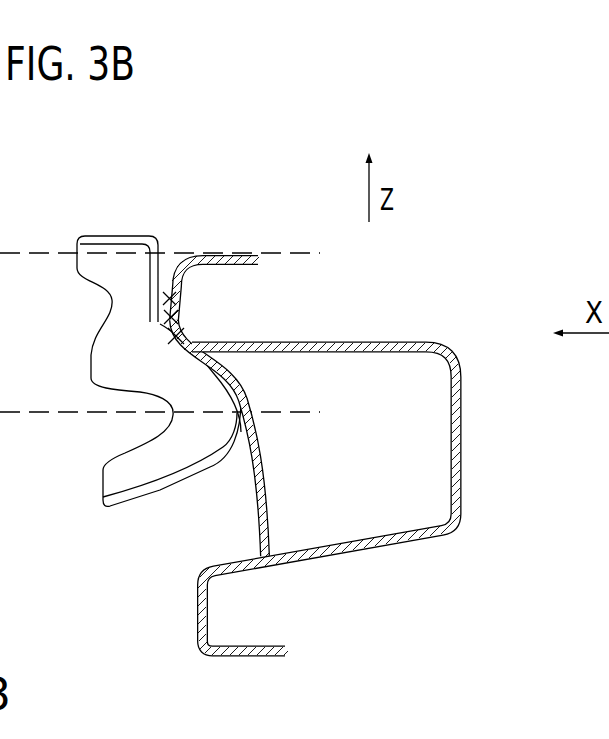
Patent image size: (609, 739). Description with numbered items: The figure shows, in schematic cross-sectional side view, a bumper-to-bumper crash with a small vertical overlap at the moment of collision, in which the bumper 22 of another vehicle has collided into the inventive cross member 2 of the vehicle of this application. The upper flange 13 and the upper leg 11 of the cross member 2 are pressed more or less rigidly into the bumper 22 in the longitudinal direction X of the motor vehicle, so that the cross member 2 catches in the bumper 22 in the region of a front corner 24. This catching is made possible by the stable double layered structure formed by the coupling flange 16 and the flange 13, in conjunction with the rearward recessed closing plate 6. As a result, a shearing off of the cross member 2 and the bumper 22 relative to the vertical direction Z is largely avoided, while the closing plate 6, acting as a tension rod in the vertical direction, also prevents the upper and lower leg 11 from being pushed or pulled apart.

The cross member 2 is at (260, 441).
The closing plate 6 is at (265, 490).
The upper leg 11 is at (370, 340).
The upper flange 13 is at (181, 312).
The coupling flange 16 is at (172, 320).
The bumper 22 is at (114, 243).
The front corner 24 is at (177, 347).